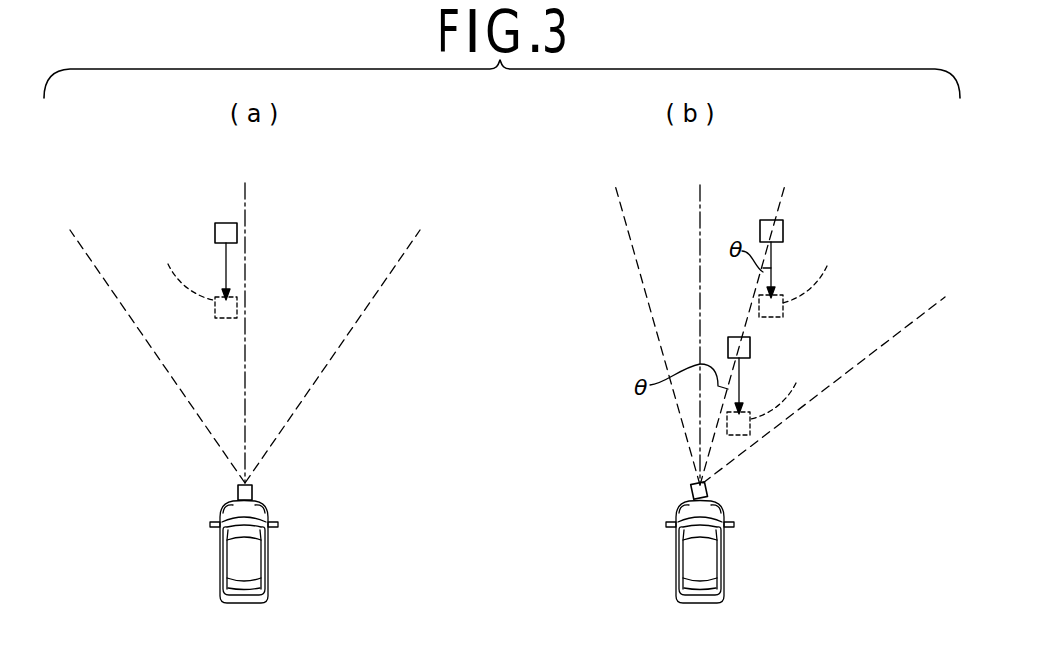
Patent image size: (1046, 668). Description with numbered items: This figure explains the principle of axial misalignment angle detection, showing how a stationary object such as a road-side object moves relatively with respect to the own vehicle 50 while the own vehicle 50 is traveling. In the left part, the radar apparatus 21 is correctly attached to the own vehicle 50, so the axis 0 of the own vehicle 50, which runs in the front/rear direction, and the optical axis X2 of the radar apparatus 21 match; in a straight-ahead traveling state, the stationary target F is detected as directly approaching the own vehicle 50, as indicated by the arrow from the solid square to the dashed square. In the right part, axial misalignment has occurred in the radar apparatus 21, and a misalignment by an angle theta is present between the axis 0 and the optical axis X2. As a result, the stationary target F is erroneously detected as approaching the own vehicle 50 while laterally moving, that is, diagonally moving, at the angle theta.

The radar apparatus 21 is at (252, 492).
The own vehicle 50 is at (268, 572).
The stationary target F is at (215, 234).
The optical axis X2 is at (262, 172).
The axis O 0 is at (474, 316).